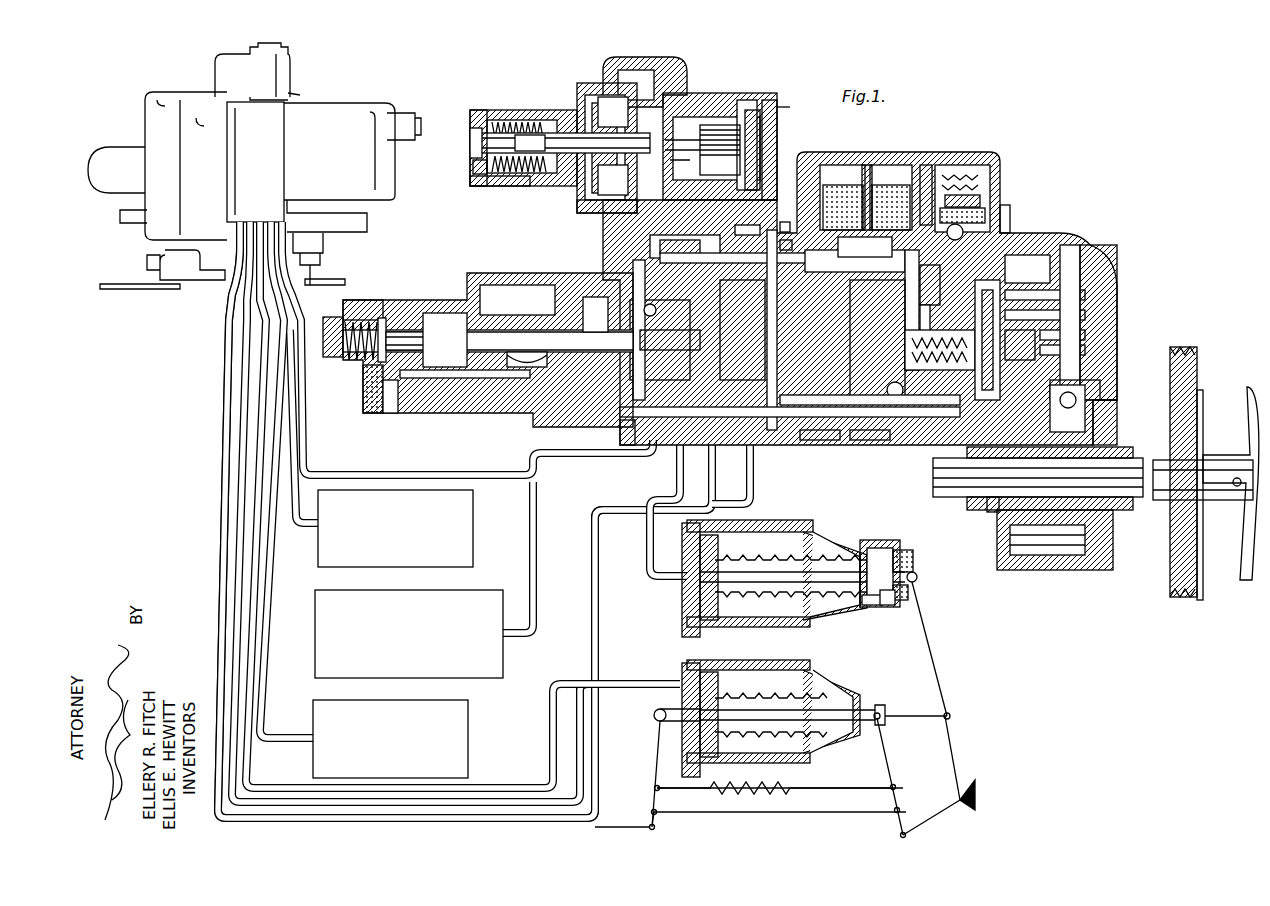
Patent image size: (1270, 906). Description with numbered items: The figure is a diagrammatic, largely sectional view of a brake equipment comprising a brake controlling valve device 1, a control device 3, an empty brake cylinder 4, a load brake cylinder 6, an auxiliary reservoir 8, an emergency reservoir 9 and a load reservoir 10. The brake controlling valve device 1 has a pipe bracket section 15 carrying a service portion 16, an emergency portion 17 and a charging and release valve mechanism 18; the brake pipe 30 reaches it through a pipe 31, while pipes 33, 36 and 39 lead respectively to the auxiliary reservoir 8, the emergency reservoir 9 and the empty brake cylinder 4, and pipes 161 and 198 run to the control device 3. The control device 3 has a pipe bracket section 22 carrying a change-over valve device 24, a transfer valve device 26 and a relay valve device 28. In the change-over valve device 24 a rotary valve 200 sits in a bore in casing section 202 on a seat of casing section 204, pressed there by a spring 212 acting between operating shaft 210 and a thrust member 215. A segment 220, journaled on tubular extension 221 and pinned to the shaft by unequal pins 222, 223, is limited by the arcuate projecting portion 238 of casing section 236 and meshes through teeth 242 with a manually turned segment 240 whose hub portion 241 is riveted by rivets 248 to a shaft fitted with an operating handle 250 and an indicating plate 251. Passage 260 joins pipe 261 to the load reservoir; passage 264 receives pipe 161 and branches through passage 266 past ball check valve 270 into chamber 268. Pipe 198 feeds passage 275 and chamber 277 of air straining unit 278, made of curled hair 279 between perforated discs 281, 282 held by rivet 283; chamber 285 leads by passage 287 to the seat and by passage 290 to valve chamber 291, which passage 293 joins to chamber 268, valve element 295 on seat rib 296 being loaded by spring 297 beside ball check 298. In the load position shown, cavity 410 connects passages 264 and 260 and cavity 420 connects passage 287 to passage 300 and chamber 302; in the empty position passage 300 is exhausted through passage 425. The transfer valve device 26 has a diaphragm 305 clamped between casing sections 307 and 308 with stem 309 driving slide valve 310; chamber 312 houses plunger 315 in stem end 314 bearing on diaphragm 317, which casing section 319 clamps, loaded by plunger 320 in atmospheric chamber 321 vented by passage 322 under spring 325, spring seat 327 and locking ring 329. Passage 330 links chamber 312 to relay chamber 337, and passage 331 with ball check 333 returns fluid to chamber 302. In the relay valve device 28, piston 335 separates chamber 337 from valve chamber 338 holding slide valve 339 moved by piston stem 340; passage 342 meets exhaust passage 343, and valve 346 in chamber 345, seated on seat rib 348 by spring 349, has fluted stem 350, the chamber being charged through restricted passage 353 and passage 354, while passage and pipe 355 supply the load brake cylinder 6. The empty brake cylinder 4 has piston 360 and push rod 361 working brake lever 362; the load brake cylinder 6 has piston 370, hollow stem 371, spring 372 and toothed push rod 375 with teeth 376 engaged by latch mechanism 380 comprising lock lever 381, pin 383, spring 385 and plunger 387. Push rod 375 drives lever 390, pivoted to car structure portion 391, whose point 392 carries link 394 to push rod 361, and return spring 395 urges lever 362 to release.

The brake controlling valve device 1 is at (297, 98).
The control device 3 is at (1065, 215).
The empty brake cylinder 4 is at (808, 667).
The load brake cylinder 6 is at (815, 530).
The auxiliary reservoir 8 is at (460, 528).
The emergency reservoir 9 is at (458, 750).
The load reservoir 10 is at (320, 620).
The pipe bracket section 15 is at (270, 122).
The service portion 16 is at (344, 108).
The emergency portion 17 is at (162, 110).
The charging and release valve mechanism 18 is at (285, 68).
The pipe bracket section 22 is at (613, 440).
The change-over valve device 24 is at (865, 440).
The transfer valve device 26 is at (753, 92).
The relay valve device 28 is at (505, 415).
The brake pipe 30 is at (150, 283).
The pipe 31 is at (118, 287).
The pipe 33 is at (298, 330).
The pipe 36 is at (262, 325).
The pipe 39 is at (226, 315).
The pipe 161 is at (282, 325).
The pipe 198 is at (244, 305).
The rotary valve 200 is at (945, 418).
The casing section 202 is at (820, 440).
The casing section 204 is at (1045, 238).
The operating shaft 210 is at (1033, 345).
The spring 212 is at (910, 285).
The thrust member 215 is at (905, 335).
The segment 220 is at (1085, 315).
The tubular extension 221 is at (1085, 295).
The pin 222 is at (1085, 335).
The pin 223 is at (1085, 350).
The casing section 236 is at (1095, 245).
The arcuate projecting portion 238 is at (1070, 260).
The segment 240 is at (1090, 395).
The hub portion 241 is at (1095, 512).
The teeth 242 is at (960, 500).
The rivets 248 is at (1110, 450).
The operating handle 250 is at (1245, 565).
The plate 251 is at (1200, 395).
The passage 260 is at (935, 470).
The pipe 261 is at (538, 575).
The passage 264 is at (870, 400).
The branch passage 266 is at (790, 404).
The chamber 268 is at (862, 340).
The ball check valve 270 is at (859, 377).
The passage 275 is at (742, 330).
The chamber 277 is at (885, 172).
The air straining unit 278 is at (825, 180).
The curled hair 279 is at (925, 168).
The perforated disc 281 is at (875, 180).
The perforated disc 282 is at (865, 247).
The rivet 283 is at (780, 218).
The chamber 285 is at (780, 239).
The passage 287 is at (1033, 269).
The passage 290 is at (965, 235).
The valve chamber 291 is at (985, 213).
The passage 293 is at (965, 168).
The valve element 295 is at (980, 200).
The seat rib 296 is at (893, 310).
The spring 297 is at (975, 178).
The ball check valve element 298 is at (1012, 215).
The passage 300 is at (826, 317).
The chamber 302 is at (688, 100).
The diaphragm 305 is at (615, 68).
The casing section 307 is at (582, 210).
The casing section 308 is at (770, 98).
The stem 309 is at (762, 112).
The slide valve 310 is at (720, 146).
The chamber 312 is at (545, 115).
The end of stem 314 is at (617, 111).
The plunger 315 is at (615, 184).
The diaphragm 317 is at (580, 185).
The casing section 319 is at (490, 112).
The plunger 320 is at (485, 186).
The chamber 321 is at (507, 108).
The passage 322 is at (478, 170).
The spring 325 is at (480, 110).
The spring seat 327 is at (475, 130).
The locking ring 329 is at (522, 120).
The passage 330 is at (640, 210).
The passage 331 is at (751, 232).
The ball check valve 333 is at (680, 150).
The piston 335 is at (598, 297).
The chamber 337 is at (670, 338).
The valve chamber 338 is at (565, 285).
The slide valve 339 is at (510, 285).
The piston stem 340 is at (445, 340).
The passage 342 is at (425, 300).
The atmospheric exhaust passage 343 is at (670, 306).
The valve chamber 345 is at (365, 300).
The valve 346 is at (365, 322).
The seat rib 348 is at (390, 322).
The spring 349 is at (333, 360).
The fluted stem 350 is at (368, 400).
The restricted passage 353 is at (390, 413).
The passage 354 is at (475, 400).
The passage and pipe 355 is at (650, 572).
The piston 360 is at (712, 690).
The push rod 361 is at (820, 718).
The brake lever 362 is at (895, 785).
The piston 370 is at (700, 590).
The hollow stem 371 is at (862, 555).
The spring 372 is at (775, 562).
The push rod 375 is at (740, 575).
The teeth 376 is at (791, 603).
The latch mechanism 380 is at (890, 545).
The lock lever 381 is at (892, 606).
The pin 383 is at (868, 605).
The spring 385 is at (915, 555).
The plunger 387 is at (910, 590).
The lever 390 is at (940, 690).
The car structure portion 391 is at (975, 800).
The pivot point 392 is at (950, 716).
The link 394 is at (903, 716).
The return spring 395 is at (800, 790).
The cavity 410 is at (975, 348).
The cavity 420 is at (1002, 340).
The atmospheric exhaust passage 425 is at (1069, 408).